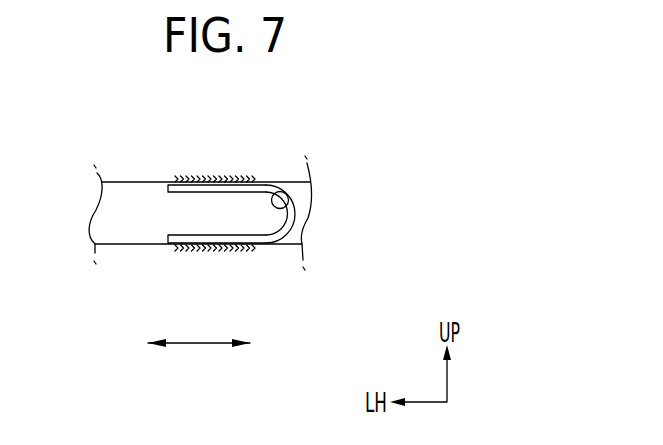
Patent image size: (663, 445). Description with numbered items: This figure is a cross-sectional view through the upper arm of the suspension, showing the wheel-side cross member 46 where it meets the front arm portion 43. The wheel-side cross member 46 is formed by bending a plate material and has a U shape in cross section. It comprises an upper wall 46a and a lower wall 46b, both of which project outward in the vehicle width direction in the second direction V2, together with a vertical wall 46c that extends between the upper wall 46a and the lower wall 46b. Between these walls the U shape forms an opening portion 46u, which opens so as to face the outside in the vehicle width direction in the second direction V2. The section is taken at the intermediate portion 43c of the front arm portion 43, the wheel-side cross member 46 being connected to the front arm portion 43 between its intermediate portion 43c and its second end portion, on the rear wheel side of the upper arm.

The front arm portion 43 is at (200, 183).
The intermediate portion of the front arm portion 43c is at (147, 182).
The wheel-side cross member 46 is at (402, 103).
The upper wall 46a is at (259, 184).
The lower wall 46b is at (256, 244).
The vertical wall 46c is at (277, 189).
The opening portion 46u is at (247, 237).
The second direction V2 is at (203, 345).